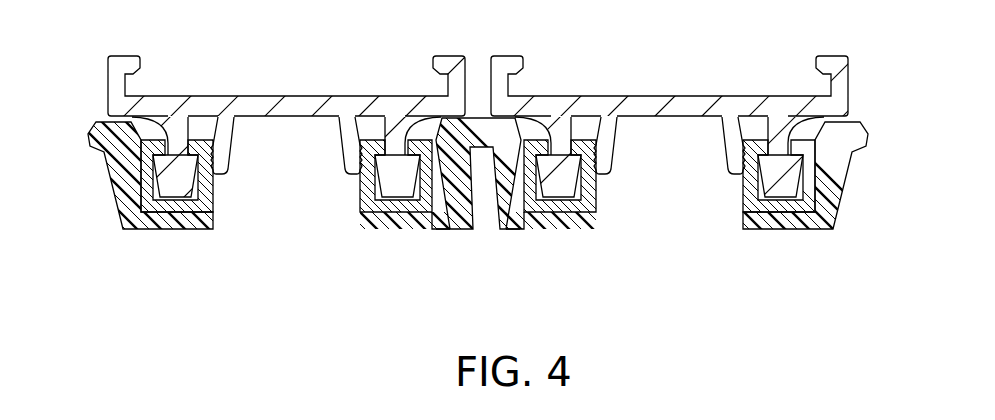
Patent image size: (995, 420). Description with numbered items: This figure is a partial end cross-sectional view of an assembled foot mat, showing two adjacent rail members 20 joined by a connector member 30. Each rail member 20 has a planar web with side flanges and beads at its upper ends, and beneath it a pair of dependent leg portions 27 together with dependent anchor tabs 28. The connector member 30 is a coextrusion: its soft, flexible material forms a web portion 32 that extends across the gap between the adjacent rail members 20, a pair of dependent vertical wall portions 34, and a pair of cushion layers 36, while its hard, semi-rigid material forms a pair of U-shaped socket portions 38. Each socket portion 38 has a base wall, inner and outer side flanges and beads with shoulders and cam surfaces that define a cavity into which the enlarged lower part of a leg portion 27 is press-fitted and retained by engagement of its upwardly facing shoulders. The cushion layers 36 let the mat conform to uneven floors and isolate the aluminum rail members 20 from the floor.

The rail member 20 is at (262, 96).
The leg portion 27 is at (180, 195).
The anchor tab 28 is at (340, 152).
The connector member 30 is at (131, 232).
The web portion 32 is at (481, 152).
The vertical wall portion 34 is at (410, 125).
The cushion layer 36 is at (418, 230).
The socket portion 38 is at (362, 182).